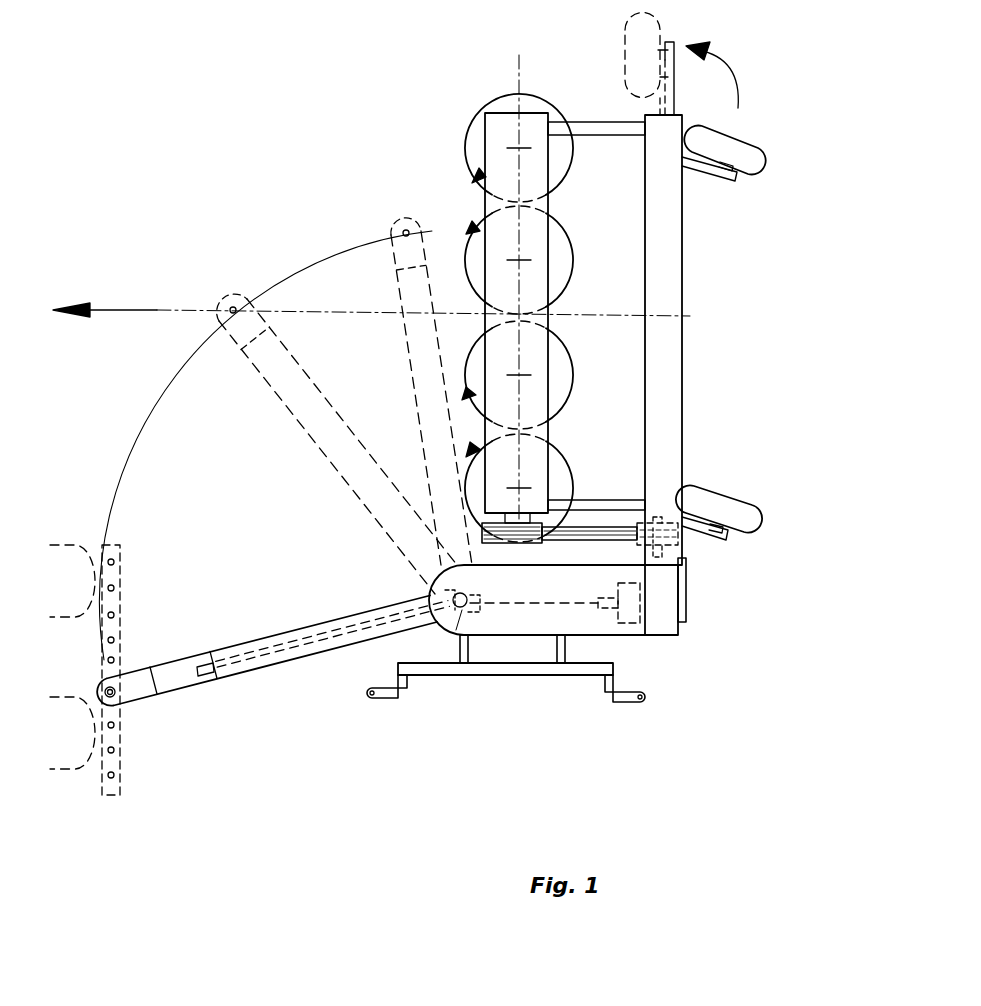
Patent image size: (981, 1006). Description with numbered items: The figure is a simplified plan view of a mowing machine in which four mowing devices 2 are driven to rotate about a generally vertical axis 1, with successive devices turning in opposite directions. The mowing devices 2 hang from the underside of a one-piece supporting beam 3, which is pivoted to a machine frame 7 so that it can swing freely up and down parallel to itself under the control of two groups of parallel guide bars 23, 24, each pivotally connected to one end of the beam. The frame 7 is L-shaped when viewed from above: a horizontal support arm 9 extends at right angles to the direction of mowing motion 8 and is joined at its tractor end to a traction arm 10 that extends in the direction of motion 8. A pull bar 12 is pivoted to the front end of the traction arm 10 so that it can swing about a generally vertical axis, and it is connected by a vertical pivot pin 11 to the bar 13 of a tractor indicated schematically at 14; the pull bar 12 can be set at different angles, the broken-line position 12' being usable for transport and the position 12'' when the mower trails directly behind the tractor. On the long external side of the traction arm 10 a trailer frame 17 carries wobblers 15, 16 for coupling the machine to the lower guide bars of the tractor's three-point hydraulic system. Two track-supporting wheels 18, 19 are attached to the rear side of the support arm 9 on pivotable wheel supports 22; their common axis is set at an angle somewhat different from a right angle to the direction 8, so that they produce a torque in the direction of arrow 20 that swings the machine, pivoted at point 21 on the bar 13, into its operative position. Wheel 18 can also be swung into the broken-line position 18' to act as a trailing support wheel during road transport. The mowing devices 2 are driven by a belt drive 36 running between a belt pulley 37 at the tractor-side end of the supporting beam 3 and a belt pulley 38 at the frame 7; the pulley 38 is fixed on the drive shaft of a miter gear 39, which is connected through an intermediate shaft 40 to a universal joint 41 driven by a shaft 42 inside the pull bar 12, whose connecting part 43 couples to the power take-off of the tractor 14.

The generally vertical axis 1 is at (522, 258).
The mowing device 2 is at (528, 100).
The supporting beam 3 is at (540, 204).
The machine frame 7 is at (683, 416).
The direction of mowing motion 8 is at (113, 306).
The support arm 9 is at (685, 286).
The traction arm 10 is at (597, 633).
The vertical pivot pin 11 is at (452, 637).
The pull bar 12 is at (267, 671).
The pull bar position 12' is at (410, 391).
The pull bar position 12'' is at (337, 444).
The bar of tractor 13 is at (117, 598).
The tractor 14 is at (252, 445).
The wobbler 15 is at (378, 700).
The wobbler 16 is at (622, 705).
The trailer frame 17 is at (493, 672).
The track-supporting wheel 18 is at (731, 136).
The track-supporting wheel position 18' is at (619, 64).
The track-supporting wheel 19 is at (735, 500).
The torque direction arrow 20 is at (723, 69).
The pivot point 21 is at (115, 703).
The track wheel support 22 is at (703, 168).
The group of parallel guide bars 23 is at (600, 112).
The group of parallel guide bars 24 is at (613, 492).
The belt drive 36 is at (607, 538).
The belt pulley 37 is at (488, 544).
The belt pulley 38 is at (652, 520).
The miter gear 39 is at (687, 617).
The intermediate shaft 40 is at (555, 600).
The universal joint 41 is at (480, 603).
The shaft 42 is at (280, 643).
The connecting part 43 is at (207, 672).